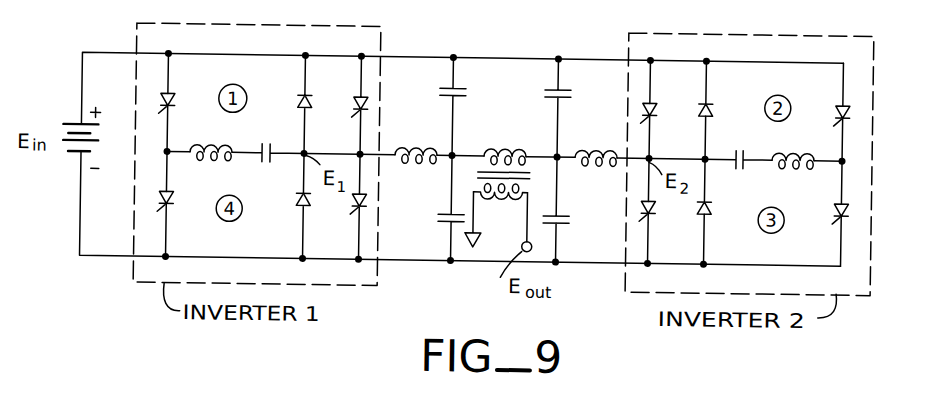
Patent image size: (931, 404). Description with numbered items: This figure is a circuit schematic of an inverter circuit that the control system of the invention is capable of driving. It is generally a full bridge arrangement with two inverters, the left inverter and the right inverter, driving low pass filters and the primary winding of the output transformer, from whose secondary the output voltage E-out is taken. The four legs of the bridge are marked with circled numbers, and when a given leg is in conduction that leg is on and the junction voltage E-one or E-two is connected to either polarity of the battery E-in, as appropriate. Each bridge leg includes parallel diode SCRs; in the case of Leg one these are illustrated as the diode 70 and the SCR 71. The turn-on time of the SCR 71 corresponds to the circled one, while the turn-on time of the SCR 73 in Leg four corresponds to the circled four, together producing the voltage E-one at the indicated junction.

The diode 70 is at (308, 104).
The SCR 71 is at (355, 92).
The SCR 73 is at (353, 198).